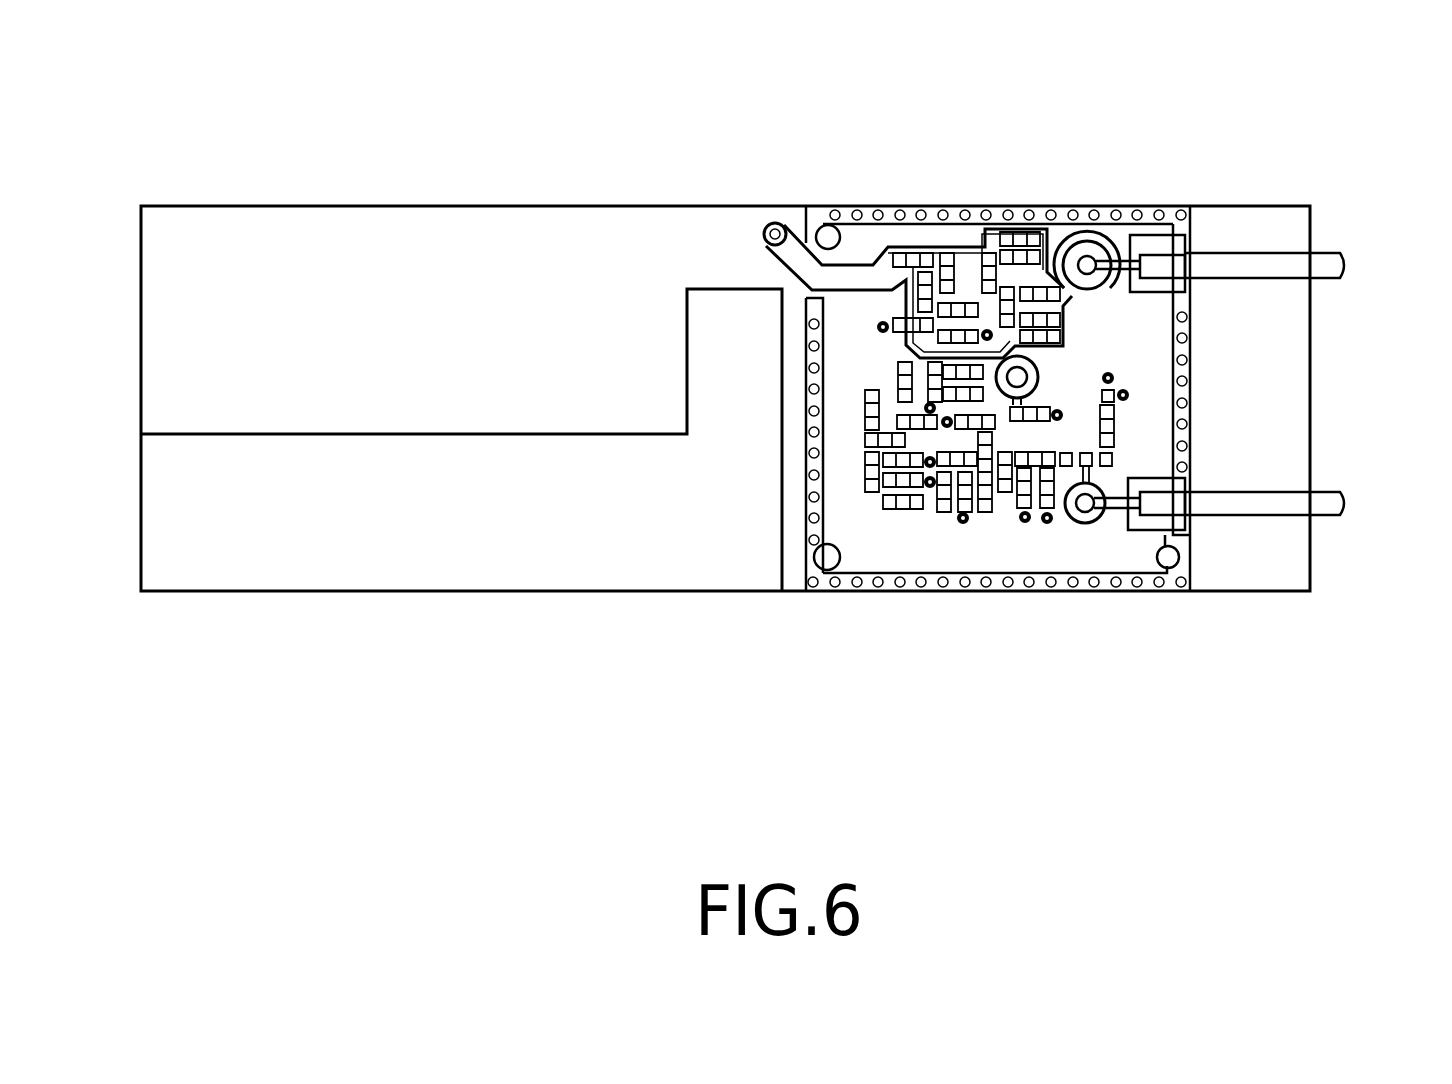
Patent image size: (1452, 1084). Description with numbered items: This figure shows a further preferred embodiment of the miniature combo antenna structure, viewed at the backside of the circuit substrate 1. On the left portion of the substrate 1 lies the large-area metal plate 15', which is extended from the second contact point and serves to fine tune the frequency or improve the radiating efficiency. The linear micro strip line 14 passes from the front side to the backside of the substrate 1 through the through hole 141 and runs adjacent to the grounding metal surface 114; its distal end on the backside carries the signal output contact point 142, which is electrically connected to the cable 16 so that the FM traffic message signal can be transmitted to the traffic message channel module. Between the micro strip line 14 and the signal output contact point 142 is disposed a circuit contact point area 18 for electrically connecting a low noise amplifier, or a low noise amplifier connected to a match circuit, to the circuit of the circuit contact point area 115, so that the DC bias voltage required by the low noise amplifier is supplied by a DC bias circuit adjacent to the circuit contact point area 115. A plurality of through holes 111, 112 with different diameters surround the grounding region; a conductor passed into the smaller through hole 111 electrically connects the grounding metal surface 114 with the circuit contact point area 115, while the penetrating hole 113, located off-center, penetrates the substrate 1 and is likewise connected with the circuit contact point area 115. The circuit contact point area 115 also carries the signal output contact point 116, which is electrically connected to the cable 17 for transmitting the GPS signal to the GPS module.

The circuit substrate 1 is at (1232, 222).
The micro strip line 14 is at (856, 275).
The through hole 141 is at (775, 226).
The signal output contact point 142 is at (1083, 250).
The metal plate 15' is at (461, 493).
The cable 16 is at (1332, 264).
The cable 17 is at (1340, 515).
The circuit contact point area 18 is at (975, 292).
The through hole 111 is at (1030, 592).
The through hole 112 is at (1180, 558).
The penetrating hole 113 is at (1017, 377).
The grounding metal surface 114 is at (1185, 392).
The circuit contact point area 115 is at (945, 513).
The signal output contact point 116 is at (1081, 522).